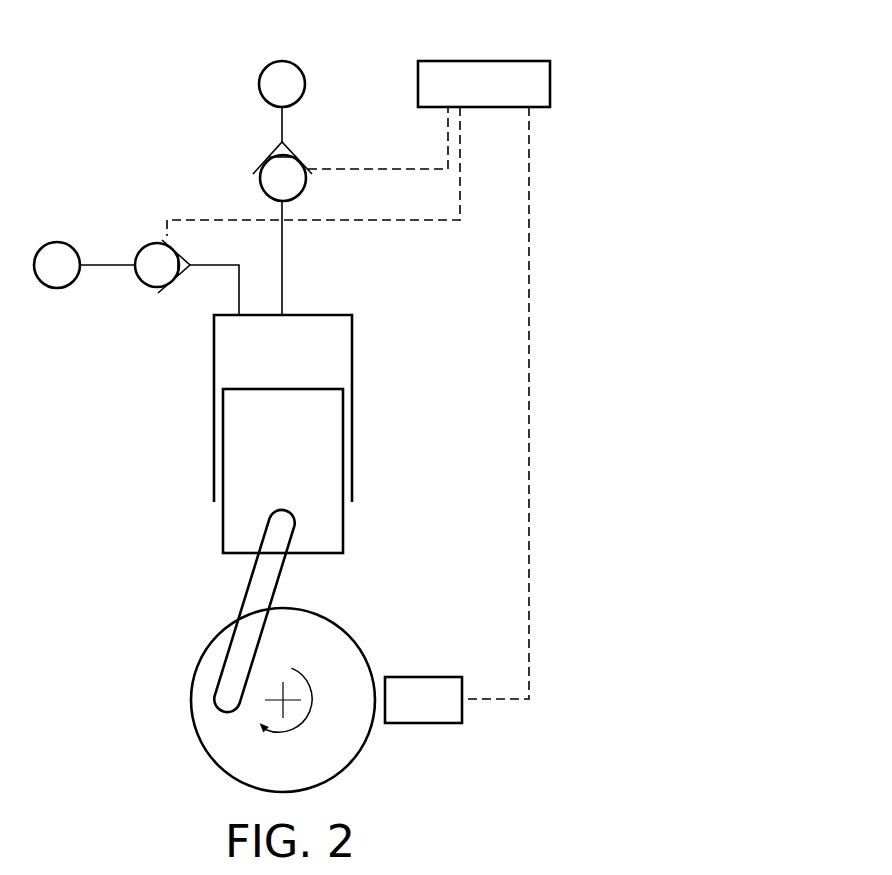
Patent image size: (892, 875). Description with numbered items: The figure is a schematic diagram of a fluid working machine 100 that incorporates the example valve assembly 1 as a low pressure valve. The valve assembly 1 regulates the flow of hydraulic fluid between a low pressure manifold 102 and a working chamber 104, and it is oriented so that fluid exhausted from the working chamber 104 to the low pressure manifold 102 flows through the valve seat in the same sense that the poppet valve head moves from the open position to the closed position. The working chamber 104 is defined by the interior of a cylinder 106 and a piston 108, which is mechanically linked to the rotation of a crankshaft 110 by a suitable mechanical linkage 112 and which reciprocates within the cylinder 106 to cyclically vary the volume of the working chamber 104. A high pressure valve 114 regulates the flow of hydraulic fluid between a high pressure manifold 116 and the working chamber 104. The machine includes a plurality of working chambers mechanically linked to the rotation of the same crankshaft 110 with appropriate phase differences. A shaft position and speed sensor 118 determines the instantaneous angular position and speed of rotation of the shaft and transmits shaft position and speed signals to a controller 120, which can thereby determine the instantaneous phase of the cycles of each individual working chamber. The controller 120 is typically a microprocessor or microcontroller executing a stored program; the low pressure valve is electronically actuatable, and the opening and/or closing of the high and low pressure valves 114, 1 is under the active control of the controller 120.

The fluid working machine 100 is at (111, 70).
The low pressure manifold 102 is at (280, 60).
The valve assembly 1 is at (263, 158).
The working chamber 104 is at (334, 356).
The cylinder 106 is at (214, 331).
The piston 108 is at (223, 405).
The crankshaft 110 is at (192, 700).
The mechanical linkage 112 is at (247, 598).
The high pressure valve 114 is at (141, 246).
The high pressure manifold 116 is at (53, 241).
The shaft position and speed sensor 118 is at (430, 676).
The controller 120 is at (521, 60).